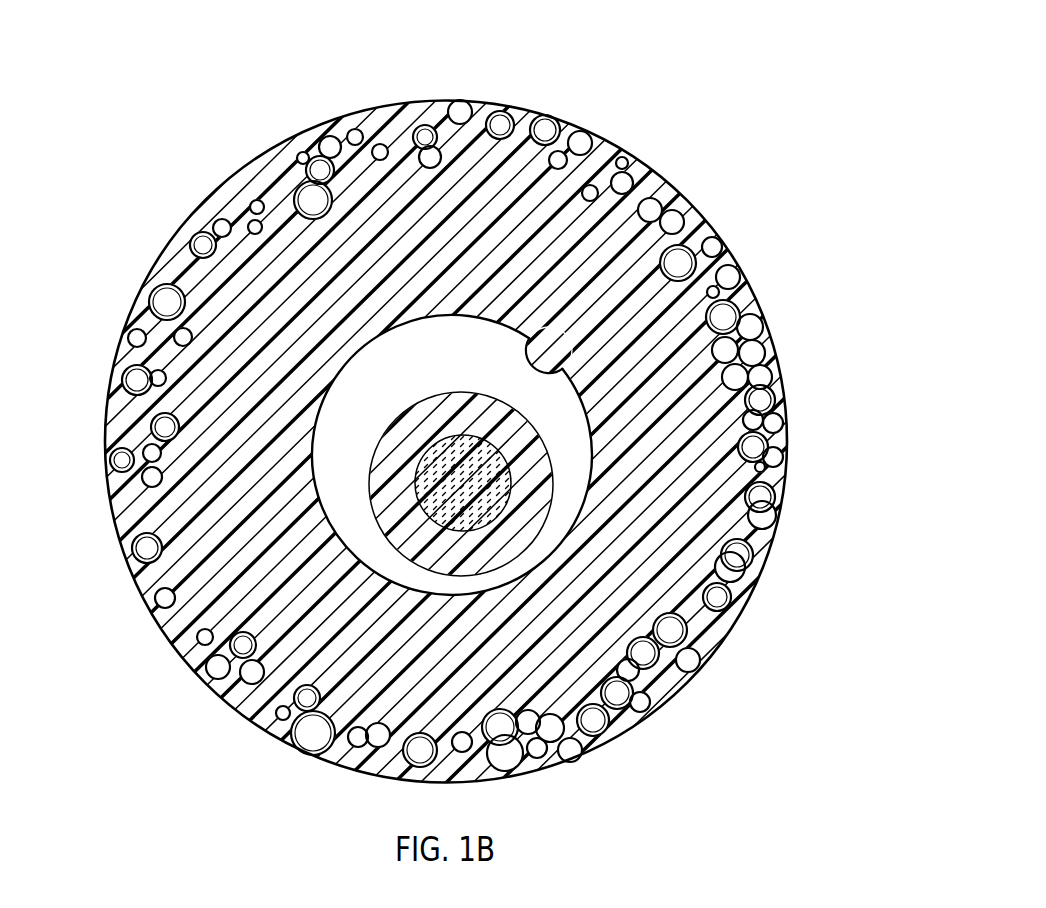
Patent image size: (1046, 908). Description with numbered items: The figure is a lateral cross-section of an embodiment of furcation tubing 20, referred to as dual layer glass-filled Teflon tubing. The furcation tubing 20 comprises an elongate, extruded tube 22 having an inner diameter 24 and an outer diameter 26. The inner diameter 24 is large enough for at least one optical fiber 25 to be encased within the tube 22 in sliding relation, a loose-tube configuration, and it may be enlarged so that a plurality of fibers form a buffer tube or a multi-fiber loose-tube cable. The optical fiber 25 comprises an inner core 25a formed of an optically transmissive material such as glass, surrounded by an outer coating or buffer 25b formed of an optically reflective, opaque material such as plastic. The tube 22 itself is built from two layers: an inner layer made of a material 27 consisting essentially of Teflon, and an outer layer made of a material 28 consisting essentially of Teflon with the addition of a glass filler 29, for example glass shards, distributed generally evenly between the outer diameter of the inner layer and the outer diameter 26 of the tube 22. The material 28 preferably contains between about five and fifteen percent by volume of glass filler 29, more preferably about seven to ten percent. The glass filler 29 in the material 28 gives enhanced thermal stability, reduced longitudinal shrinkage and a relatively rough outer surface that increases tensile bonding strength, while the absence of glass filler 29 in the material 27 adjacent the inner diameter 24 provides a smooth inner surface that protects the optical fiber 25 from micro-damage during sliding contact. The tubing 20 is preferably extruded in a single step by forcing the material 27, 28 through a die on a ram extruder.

The furcation tubing 20 is at (523, 465).
The tube 22 is at (105, 447).
The inner diameter 24 is at (566, 370).
The optical fiber 25 is at (215, 627).
The inner core 25a is at (273, 487).
The outer coating or buffer 25b is at (400, 457).
The outer diameter 26 is at (195, 230).
The inner layer material 27 is at (640, 510).
The outer layer material 28 is at (663, 672).
The glass filler 29 is at (760, 350).